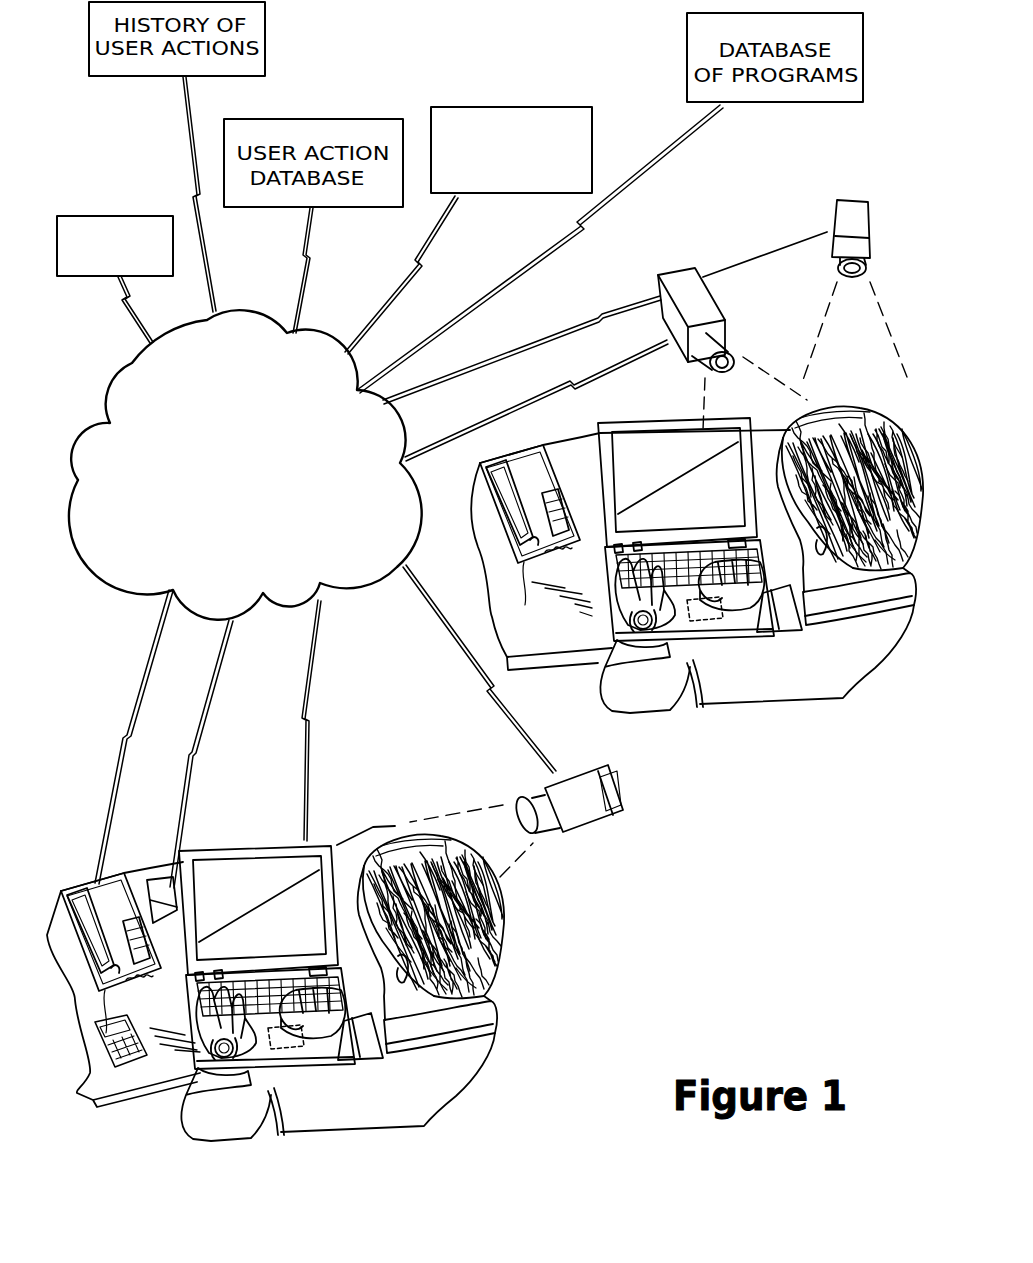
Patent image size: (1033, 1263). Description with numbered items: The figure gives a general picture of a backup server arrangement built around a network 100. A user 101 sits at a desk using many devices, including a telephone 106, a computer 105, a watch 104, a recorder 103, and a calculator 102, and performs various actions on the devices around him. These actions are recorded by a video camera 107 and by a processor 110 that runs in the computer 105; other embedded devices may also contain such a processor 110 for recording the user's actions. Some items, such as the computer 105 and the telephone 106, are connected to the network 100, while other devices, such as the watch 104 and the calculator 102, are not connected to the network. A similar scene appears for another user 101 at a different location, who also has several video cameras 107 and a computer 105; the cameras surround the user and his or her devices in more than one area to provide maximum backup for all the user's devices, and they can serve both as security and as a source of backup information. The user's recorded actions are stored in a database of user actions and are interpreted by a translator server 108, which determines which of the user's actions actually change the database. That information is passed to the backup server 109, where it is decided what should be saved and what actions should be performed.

The network 100 is at (101, 396).
The user 101 is at (817, 712).
The calculator 102 is at (78, 1096).
The recorder 103 is at (168, 887).
The watch 104 is at (208, 1063).
The computer 105 is at (650, 440).
The telephone 106 is at (86, 882).
The video camera 107 is at (871, 218).
The translator server 108 is at (447, 106).
The backup server 109 is at (98, 213).
The processor 110 is at (293, 1042).